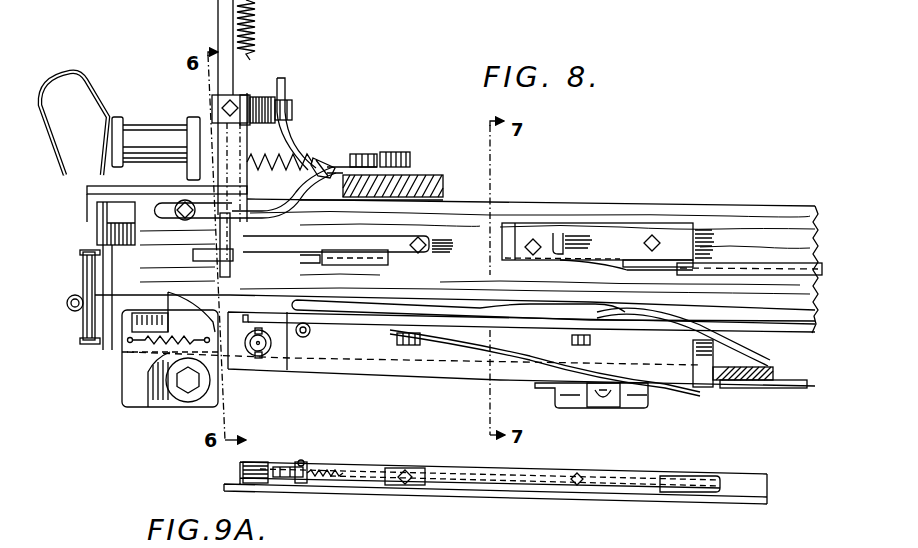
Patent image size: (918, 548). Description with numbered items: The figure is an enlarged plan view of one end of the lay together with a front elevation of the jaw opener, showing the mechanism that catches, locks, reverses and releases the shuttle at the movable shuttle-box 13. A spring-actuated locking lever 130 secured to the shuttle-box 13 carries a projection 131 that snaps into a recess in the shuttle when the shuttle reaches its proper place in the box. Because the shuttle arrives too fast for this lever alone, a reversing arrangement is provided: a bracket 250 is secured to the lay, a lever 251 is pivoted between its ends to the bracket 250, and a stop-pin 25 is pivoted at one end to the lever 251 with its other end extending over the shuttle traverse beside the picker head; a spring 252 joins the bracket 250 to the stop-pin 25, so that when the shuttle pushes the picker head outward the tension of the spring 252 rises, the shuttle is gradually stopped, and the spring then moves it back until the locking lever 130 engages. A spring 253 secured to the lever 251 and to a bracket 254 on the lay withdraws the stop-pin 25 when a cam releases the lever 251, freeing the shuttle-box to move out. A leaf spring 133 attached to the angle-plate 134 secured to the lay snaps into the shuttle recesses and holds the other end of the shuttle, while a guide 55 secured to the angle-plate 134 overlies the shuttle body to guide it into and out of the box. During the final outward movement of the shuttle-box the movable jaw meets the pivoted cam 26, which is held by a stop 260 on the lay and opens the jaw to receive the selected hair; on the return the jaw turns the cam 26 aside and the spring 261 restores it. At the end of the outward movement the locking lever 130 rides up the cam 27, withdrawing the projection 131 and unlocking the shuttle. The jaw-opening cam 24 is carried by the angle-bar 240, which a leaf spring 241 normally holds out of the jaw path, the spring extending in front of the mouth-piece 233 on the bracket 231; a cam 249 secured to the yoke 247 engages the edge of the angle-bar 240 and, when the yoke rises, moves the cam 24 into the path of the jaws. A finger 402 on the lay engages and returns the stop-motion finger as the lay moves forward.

In FIG. 8, the shuttle-box 13 is at (400, 280).
In FIG. 8, the cam 24 is at (640, 325).
In FIG. 8, the stop-pin 25 is at (223, 235).
In FIG. 8, the cam 26 is at (180, 313).
In FIG. 8, the cam 27 is at (97, 230).
In FIG. 8, the guide 55 is at (718, 268).
In FIG. 8, the locking lever 130 is at (352, 245).
In FIG. 8, the projection 131 is at (301, 262).
In FIG. 8, the leaf spring 133 is at (602, 265).
In FIG. 8, the angle-plate 134 is at (572, 230).
In FIG. 8, the bracket 231 is at (747, 378).
In FIG. 8, the mouth-piece 233 is at (787, 387).
In FIG. 8, the angle-bar 240 is at (382, 350).
In FIG. 9A, the angle-bar 240 is at (440, 491).
In FIG. 8, the leaf spring 241 is at (690, 393).
In FIG. 9A, the leaf spring 241 is at (690, 484).
In FIG. 8, the yoke 247 is at (558, 405).
In FIG. 8, the cam 249 is at (608, 400).
In FIG. 8, the bracket 250 is at (332, 165).
In FIG. 8, the lever 251 is at (262, 95).
In FIG. 8, the spring 252 is at (268, 157).
In FIG. 8, the spring 253 is at (255, 8).
In FIG. 8, the bracket 254 is at (218, 15).
In FIG. 8, the stop 260 is at (170, 352).
In FIG. 8, the spring 261 is at (150, 347).
In FIG. 8, the finger 402 is at (72, 72).